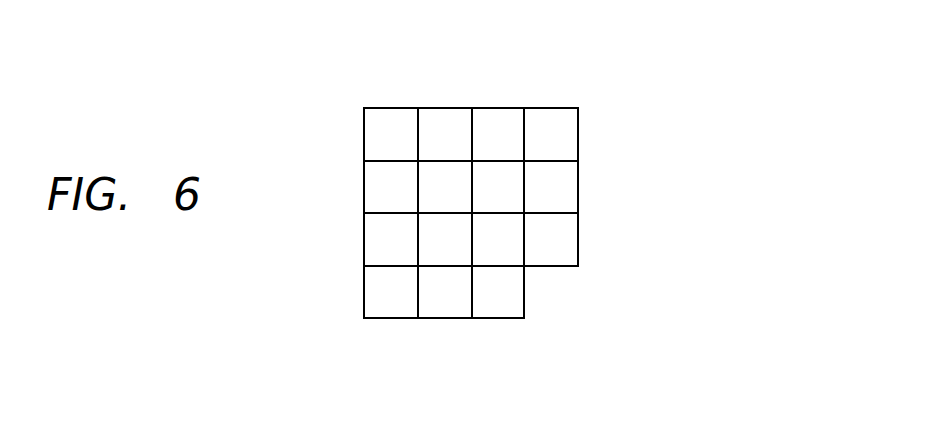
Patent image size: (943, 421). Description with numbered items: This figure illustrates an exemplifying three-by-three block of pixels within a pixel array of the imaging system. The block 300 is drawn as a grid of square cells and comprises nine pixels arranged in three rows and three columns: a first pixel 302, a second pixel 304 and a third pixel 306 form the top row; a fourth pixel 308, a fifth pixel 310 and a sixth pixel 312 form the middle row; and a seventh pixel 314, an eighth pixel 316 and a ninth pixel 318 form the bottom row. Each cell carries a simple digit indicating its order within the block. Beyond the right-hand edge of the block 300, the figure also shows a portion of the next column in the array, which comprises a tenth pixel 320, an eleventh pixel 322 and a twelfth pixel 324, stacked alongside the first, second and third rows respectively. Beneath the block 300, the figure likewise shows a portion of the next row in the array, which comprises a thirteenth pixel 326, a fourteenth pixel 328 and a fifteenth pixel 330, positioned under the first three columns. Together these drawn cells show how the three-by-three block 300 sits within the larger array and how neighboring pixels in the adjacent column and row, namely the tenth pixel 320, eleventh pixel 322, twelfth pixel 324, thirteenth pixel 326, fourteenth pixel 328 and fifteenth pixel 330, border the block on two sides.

The block 300 is at (675, 33).
The first pixel 302 is at (400, 115).
The second pixel 304 is at (455, 115).
The third pixel 306 is at (483, 117).
The tenth pixel 320 is at (535, 117).
The fourth pixel 308 is at (372, 193).
The fifth pixel 310 is at (432, 177).
The sixth pixel 312 is at (513, 200).
The eleventh pixel 322 is at (567, 172).
The seventh pixel 314 is at (372, 232).
The eighth pixel 316 is at (427, 257).
The ninth pixel 318 is at (515, 253).
The twelfth pixel 324 is at (568, 257).
The thirteenth pixel 326 is at (368, 283).
The fourteenth pixel 328 is at (438, 312).
The fifteenth pixel 330 is at (508, 312).